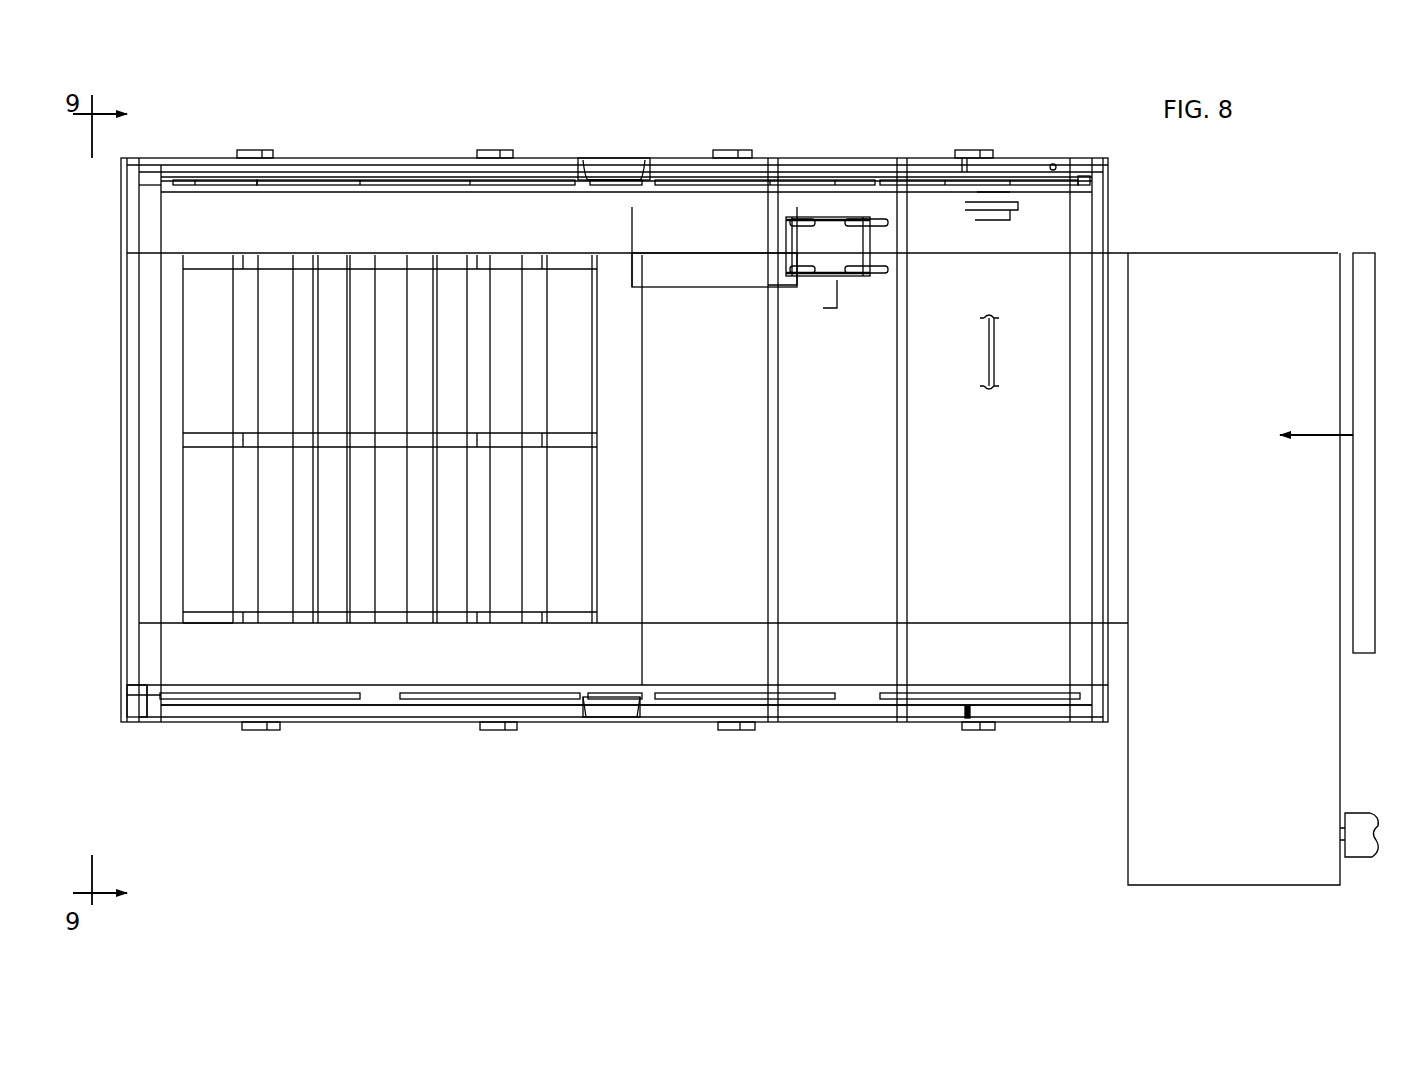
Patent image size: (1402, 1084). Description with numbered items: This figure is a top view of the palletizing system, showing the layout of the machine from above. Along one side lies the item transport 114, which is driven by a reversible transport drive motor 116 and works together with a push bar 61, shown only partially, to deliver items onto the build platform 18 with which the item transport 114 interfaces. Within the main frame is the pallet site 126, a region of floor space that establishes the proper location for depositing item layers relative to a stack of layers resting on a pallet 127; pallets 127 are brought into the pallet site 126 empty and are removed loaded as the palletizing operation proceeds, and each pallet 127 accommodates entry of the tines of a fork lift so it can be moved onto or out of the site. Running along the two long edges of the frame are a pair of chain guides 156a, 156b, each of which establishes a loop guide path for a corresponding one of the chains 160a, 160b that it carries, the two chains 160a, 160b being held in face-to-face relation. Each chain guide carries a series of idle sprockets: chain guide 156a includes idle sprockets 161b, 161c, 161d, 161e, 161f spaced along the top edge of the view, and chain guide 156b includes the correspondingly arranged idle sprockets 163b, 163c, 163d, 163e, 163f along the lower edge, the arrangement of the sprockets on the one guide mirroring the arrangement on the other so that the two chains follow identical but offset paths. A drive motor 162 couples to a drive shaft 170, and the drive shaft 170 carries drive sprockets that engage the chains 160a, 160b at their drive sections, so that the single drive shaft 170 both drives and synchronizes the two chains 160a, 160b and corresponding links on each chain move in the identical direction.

The build platform 18 is at (989, 469).
The push bar 61 is at (1363, 265).
The item transport 114 is at (1236, 768).
The transport drive motor 116 is at (1362, 857).
The pallet site 126 is at (426, 626).
The pallet 127 is at (217, 626).
The chain guide 156a is at (1084, 178).
The chain guide 156b is at (160, 692).
The chain 160a is at (372, 178).
The chain 160b is at (378, 695).
The idle sprocket 161b is at (1053, 188).
The idle sprocket 161c is at (748, 187).
The idle sprocket 161d is at (618, 186).
The idle sprocket 161e is at (413, 192).
The idle sprocket 161f is at (220, 192).
The drive motor 162 is at (847, 277).
The idle sprocket 163b is at (925, 692).
The idle sprocket 163c is at (690, 692).
The idle sprocket 163d is at (592, 692).
The idle sprocket 163e is at (445, 692).
The idle sprocket 163f is at (228, 692).
The drive shaft 170 is at (997, 345).